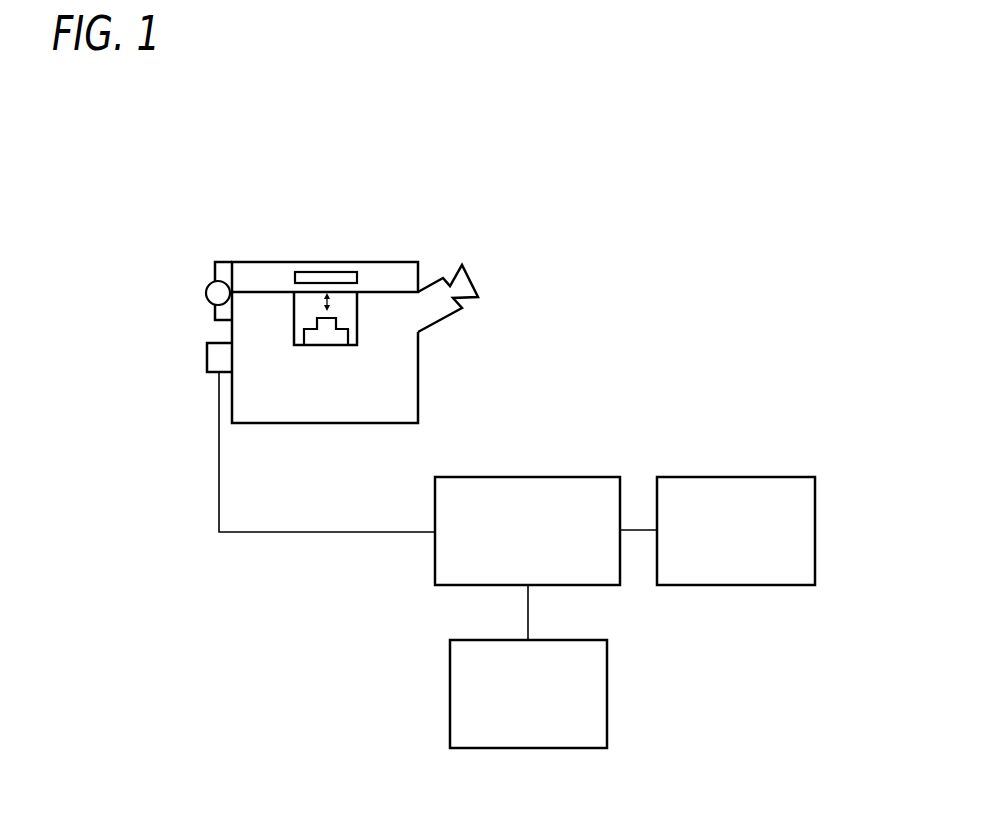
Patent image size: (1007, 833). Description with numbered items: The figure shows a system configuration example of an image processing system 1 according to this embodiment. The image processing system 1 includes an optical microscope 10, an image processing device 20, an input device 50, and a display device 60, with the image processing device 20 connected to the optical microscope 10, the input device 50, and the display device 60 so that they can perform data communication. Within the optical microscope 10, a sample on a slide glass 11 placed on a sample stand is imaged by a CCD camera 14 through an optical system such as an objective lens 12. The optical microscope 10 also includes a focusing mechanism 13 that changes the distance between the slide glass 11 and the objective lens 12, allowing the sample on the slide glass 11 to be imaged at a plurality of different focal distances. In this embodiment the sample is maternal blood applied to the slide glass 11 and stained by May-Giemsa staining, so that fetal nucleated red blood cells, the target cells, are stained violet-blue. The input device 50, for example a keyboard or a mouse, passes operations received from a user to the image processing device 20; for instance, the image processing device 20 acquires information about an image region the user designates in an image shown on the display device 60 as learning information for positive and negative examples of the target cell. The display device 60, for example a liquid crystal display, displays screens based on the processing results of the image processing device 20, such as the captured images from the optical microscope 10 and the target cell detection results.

The image processing system 1 is at (781, 247).
The optical microscope 10 is at (412, 262).
The slide glass 11 is at (328, 272).
The objective lens 12 is at (327, 338).
The focusing mechanism 13 is at (215, 271).
The CCD camera 14 is at (207, 355).
The image processing device 20 is at (548, 475).
The input device 50 is at (608, 695).
The display device 60 is at (728, 475).